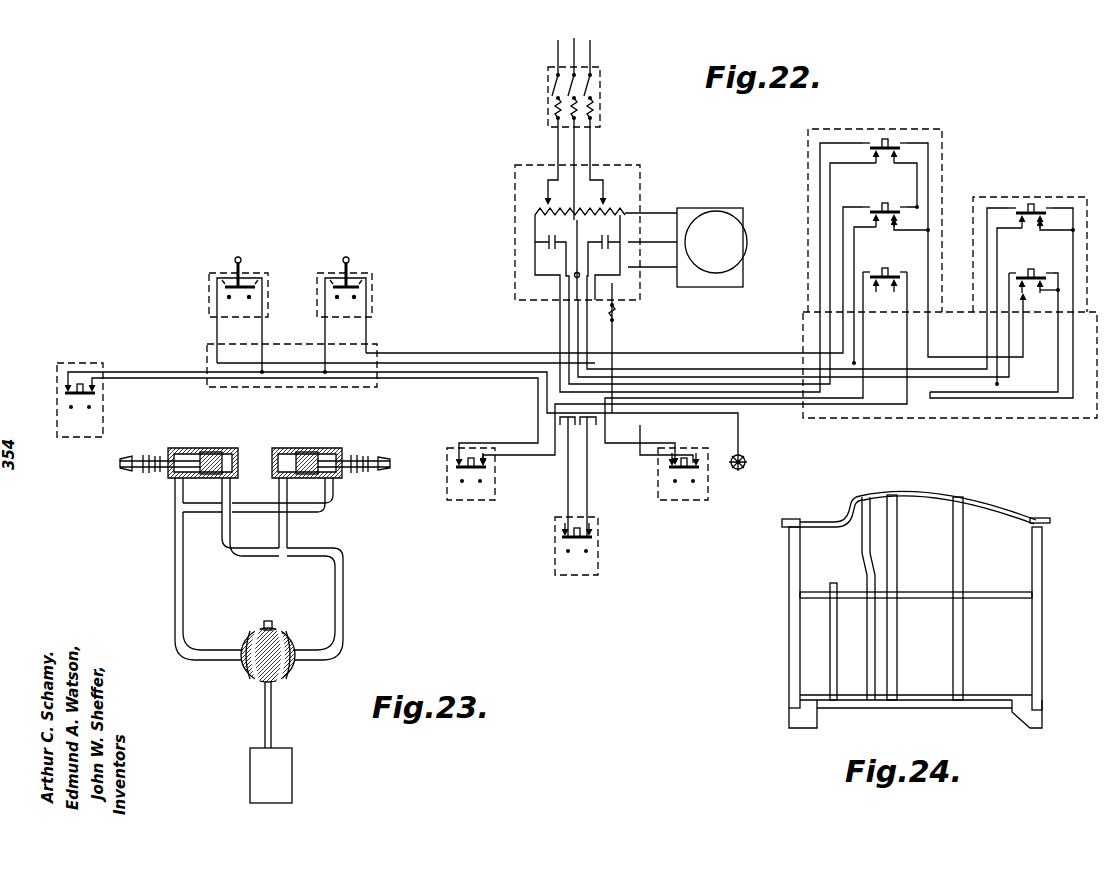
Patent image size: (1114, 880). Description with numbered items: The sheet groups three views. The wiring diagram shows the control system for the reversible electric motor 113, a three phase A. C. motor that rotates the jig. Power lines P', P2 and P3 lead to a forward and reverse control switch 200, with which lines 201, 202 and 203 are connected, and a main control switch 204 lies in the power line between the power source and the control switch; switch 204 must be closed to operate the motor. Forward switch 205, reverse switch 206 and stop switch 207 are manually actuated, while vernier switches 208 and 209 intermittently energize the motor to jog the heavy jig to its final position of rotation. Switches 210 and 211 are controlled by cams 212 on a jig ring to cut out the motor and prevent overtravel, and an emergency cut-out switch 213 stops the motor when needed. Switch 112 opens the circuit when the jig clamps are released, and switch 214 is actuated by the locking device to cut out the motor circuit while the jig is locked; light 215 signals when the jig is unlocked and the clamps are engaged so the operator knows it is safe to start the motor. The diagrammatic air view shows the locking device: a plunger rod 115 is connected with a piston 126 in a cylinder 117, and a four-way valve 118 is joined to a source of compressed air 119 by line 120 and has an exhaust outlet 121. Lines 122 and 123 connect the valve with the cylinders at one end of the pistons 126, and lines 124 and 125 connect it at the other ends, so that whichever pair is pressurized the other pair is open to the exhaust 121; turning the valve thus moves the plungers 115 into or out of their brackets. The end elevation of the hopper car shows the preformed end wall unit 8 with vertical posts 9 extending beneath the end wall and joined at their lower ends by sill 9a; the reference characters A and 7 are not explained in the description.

In FIG. 22, the power line P' is at (538, 55).
In FIG. 22, the power line P2 is at (580, 40).
In FIG. 22, the power line P3 is at (594, 47).
In FIG. 22, the main control switch 204 is at (603, 97).
In FIG. 22, the forward and reverse control switch 200 is at (636, 186).
In FIG. 22, the line 201 is at (648, 212).
In FIG. 22, the line 202 is at (649, 242).
In FIG. 22, the line 203 is at (655, 267).
In FIG. 22, the reversible electric motor 113 is at (719, 222).
In FIG. 22, the forward switch 205 is at (888, 138).
In FIG. 22, the reverse switch 206 is at (885, 201).
In FIG. 22, the stop switch 207 is at (885, 266).
In FIG. 22, the vernier switch 208 is at (1031, 204).
In FIG. 22, the vernier switch 209 is at (1029, 269).
In FIG. 22, the switch 210 is at (247, 272).
In FIG. 22, the switch 211 is at (356, 271).
In FIG. 22, the cam 212 is at (239, 260).
In FIG. 22, the emergency cut-out switch 213 is at (450, 466).
In FIG. 22, the switch 214 is at (660, 470).
In FIG. 22, the light 215 is at (746, 460).
In FIG. 22, the switch 112 is at (558, 539).
In FIG. 23, the plunger rod 115 is at (202, 456).
In FIG. 23, the cylinder 117 is at (222, 455).
In FIG. 23, the piston 126 is at (216, 448).
In FIG. 23, the line 122 is at (175, 592).
In FIG. 23, the line 123 is at (210, 516).
In FIG. 23, the line 124 is at (344, 598).
In FIG. 23, the line 125 is at (288, 528).
In FIG. 23, the four-way valve 118 is at (291, 673).
In FIG. 23, the exhaust outlet 121 is at (275, 630).
In FIG. 23, the line 120 is at (273, 712).
In FIG. 23, the source of compressed air 119 is at (285, 771).
In FIG. 24, the door frame A is at (931, 510).
In FIG. 24, the end wall unit 8 is at (810, 563).
In FIG. 24, the vertical post 9 is at (790, 639).
In FIG. 24, the base 7 is at (810, 665).
In FIG. 24, the sill 9a is at (990, 700).